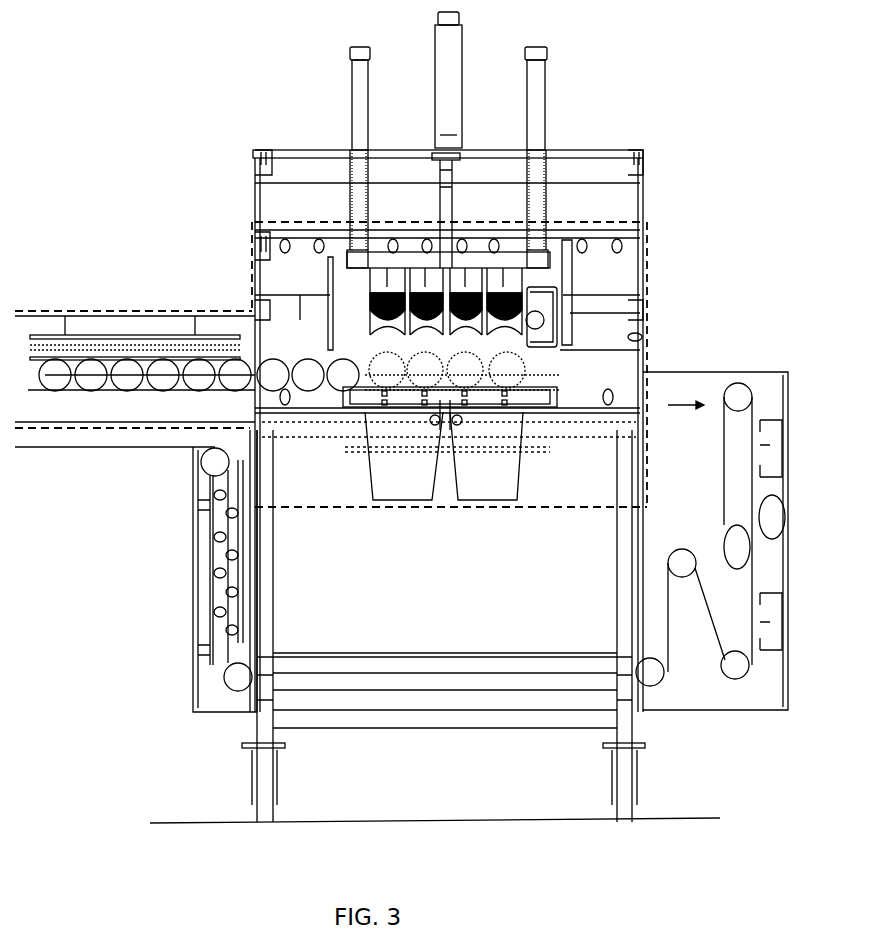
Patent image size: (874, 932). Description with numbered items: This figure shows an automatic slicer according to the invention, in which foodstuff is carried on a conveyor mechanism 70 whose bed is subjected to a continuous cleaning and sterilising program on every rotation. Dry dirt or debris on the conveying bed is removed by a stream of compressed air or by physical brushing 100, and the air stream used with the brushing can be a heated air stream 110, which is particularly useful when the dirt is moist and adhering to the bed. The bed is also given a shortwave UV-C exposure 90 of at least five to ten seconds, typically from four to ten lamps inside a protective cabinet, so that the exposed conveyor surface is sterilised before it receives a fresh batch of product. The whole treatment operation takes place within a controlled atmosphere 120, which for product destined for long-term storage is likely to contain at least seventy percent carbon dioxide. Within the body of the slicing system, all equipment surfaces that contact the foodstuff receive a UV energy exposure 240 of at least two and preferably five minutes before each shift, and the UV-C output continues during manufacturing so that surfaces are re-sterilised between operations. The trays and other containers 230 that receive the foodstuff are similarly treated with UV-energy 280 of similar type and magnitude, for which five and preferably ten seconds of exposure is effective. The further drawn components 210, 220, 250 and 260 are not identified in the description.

The conveyor mechanism 70 is at (72, 373).
The shortwave UV-C exposure 90 is at (212, 573).
The physical brushing 100 is at (773, 608).
The heated air stream 110 is at (362, 692).
The controlled atmosphere 120 is at (645, 222).
The molding unit 210 is at (517, 308).
The formed products 220 is at (470, 367).
The trays and other containers 230 is at (497, 467).
The UV energy exposure 240 is at (277, 240).
The guide rail 250 is at (205, 330).
The conveyor roller 260 is at (138, 375).
The UV-energy 280 is at (352, 452).